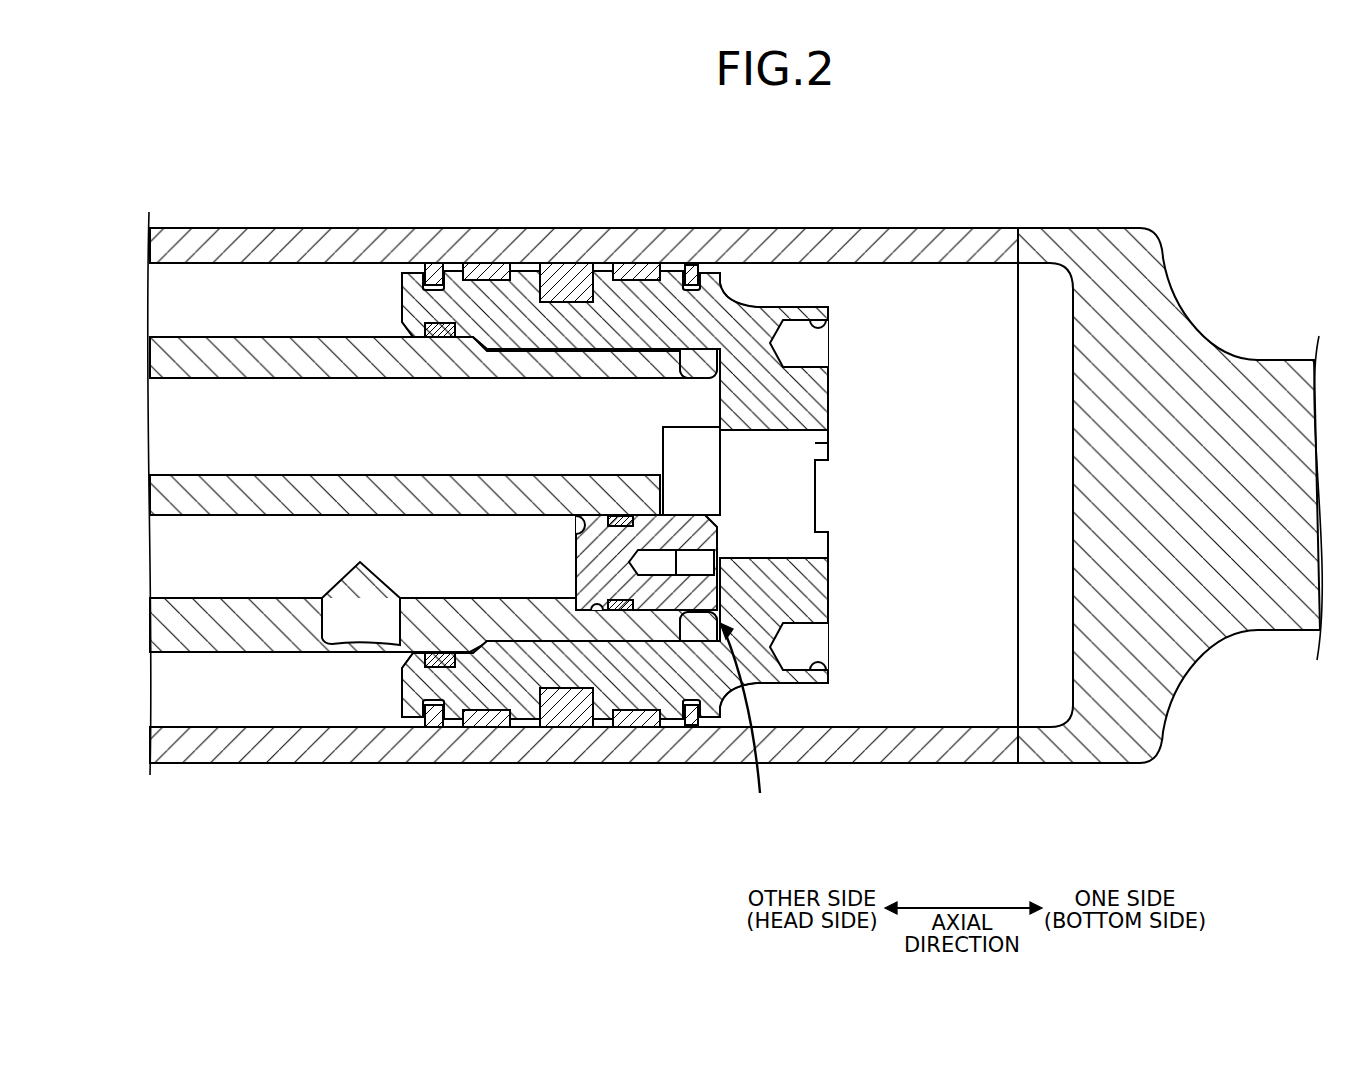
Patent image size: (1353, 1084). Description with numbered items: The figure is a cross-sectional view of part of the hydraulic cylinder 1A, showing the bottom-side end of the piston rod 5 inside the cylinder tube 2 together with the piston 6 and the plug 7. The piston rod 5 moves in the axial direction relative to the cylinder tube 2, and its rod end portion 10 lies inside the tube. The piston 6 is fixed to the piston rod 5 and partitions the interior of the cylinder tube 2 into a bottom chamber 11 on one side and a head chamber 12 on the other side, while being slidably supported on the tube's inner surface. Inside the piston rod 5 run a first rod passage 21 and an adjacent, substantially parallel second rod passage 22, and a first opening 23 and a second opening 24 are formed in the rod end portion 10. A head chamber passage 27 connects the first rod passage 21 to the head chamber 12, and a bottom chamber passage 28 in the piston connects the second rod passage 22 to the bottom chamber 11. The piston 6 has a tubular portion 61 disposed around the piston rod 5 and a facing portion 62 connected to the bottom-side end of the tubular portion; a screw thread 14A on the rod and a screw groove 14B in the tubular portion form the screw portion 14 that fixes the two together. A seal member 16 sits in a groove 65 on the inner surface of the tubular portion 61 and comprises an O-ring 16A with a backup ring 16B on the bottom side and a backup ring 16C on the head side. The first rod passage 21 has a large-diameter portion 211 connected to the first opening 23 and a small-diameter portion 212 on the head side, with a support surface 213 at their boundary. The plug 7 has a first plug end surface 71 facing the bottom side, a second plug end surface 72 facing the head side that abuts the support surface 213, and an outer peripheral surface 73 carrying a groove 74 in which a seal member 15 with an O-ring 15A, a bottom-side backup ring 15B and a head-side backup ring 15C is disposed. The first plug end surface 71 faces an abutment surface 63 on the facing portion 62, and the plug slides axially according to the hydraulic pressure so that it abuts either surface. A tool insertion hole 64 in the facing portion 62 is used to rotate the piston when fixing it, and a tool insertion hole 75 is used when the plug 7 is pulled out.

The hydraulic cylinder 1A is at (1007, 197).
The cylinder tube 2 is at (296, 228).
The piston rod 5 is at (252, 337).
The piston 6 is at (712, 397).
The plug 7 is at (658, 500).
The rod end portion 10 is at (747, 719).
The bottom chamber 11 is at (950, 293).
The head chamber 12 is at (325, 705).
The screw portion 14 is at (583, 192).
The screw thread 14A is at (570, 348).
The screw groove 14B is at (535, 355).
The seal member 15 is at (552, 866).
The O-ring 15A is at (622, 612).
The backup ring 15B is at (630, 612).
The backup ring 15C is at (613, 612).
The seal member 16 is at (497, 176).
The O-ring 16A is at (440, 325).
The backup ring 16B is at (443, 352).
The backup ring 16C is at (428, 325).
The first rod passage 21 is at (255, 585).
The second rod passage 22 is at (347, 393).
The first opening 23 is at (713, 610).
The second opening 24 is at (745, 390).
The head chamber passage 27 is at (370, 620).
The bottom chamber passage 28 is at (817, 443).
The tubular portion 61 is at (625, 312).
The facing portion 62 is at (825, 578).
The abutment surface 63 is at (718, 612).
The tool insertion hole 64 is at (818, 322).
The groove 65 is at (443, 340).
The first plug end surface 71 is at (765, 640).
The second plug end surface 72 is at (580, 612).
The outer peripheral surface 73 is at (650, 612).
The groove 74 is at (616, 516).
The tool insertion hole 75 is at (683, 612).
The large-diameter portion 211 is at (600, 612).
The small-diameter portion 212 is at (518, 582).
The support surface 213 is at (576, 530).